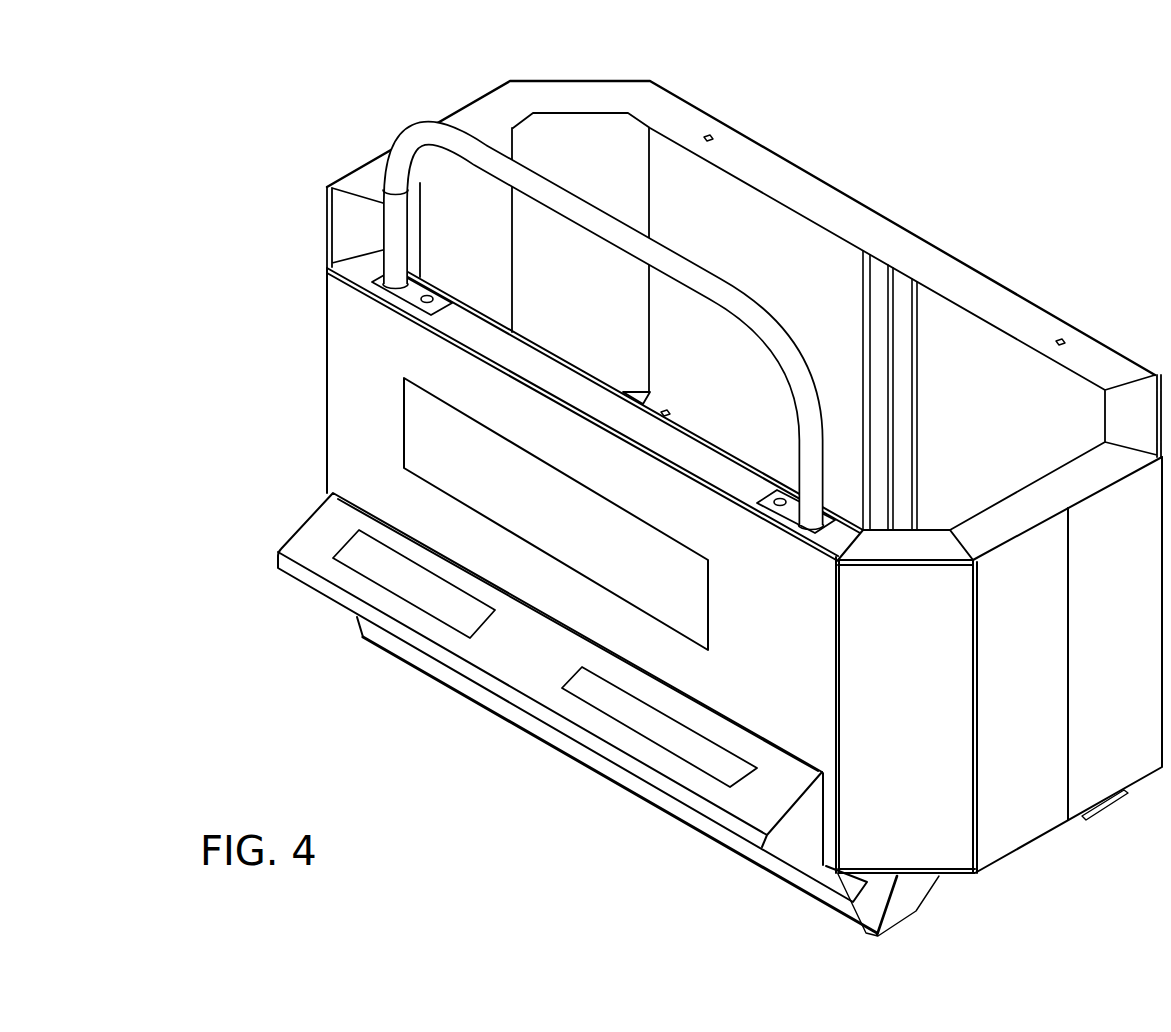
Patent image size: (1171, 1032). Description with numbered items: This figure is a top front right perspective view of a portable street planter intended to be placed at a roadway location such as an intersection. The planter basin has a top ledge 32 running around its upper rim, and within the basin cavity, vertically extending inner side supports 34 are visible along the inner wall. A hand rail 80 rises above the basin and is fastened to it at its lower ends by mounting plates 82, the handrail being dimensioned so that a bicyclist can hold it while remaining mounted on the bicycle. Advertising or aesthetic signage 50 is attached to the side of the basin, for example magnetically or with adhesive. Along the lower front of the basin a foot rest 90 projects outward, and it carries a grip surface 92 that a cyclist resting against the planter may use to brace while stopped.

The top ledge 32 is at (837, 210).
The inner side support 34 is at (895, 347).
The signage 50 is at (433, 431).
The hand rail 80 is at (620, 220).
The handle mounting plate 82 is at (410, 297).
The foot rest 90 is at (549, 713).
The grip surface 92 is at (473, 637).